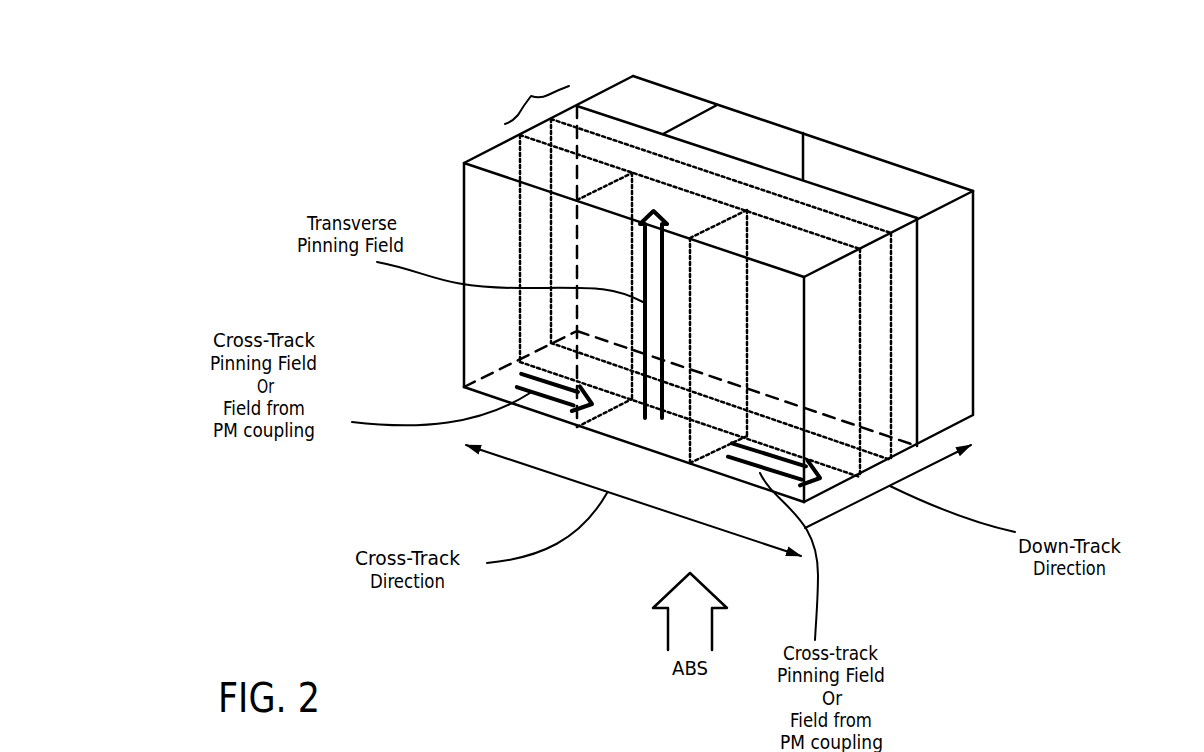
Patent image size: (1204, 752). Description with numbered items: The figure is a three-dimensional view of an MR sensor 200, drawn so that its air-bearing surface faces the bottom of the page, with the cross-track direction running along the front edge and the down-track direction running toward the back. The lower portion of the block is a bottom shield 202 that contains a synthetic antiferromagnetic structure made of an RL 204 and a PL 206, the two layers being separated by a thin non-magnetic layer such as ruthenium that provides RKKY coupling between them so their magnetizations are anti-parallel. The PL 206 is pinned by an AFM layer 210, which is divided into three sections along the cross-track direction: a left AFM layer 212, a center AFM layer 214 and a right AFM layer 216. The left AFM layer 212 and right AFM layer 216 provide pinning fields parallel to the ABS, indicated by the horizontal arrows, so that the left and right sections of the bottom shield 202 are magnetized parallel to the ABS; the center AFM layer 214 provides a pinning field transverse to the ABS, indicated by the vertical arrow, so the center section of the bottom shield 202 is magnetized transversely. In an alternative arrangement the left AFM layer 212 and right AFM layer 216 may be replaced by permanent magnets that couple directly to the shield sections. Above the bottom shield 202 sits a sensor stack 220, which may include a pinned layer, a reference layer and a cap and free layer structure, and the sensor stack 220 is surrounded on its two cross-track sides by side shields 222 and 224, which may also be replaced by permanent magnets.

The MR sensor 200 is at (278, 76).
The bottom shield 202 is at (521, 91).
The RL (reference layer) 204 is at (906, 288).
The PL (pinned layer) 206 is at (876, 348).
The AFM layer 210 is at (832, 378).
The left AFM layer 212 is at (561, 171).
The center AFM layer 214 is at (659, 446).
The right AFM layer 216 is at (791, 244).
The sensor stack 220 is at (764, 118).
The side shield 222 is at (664, 102).
The side shield 224 is at (886, 189).